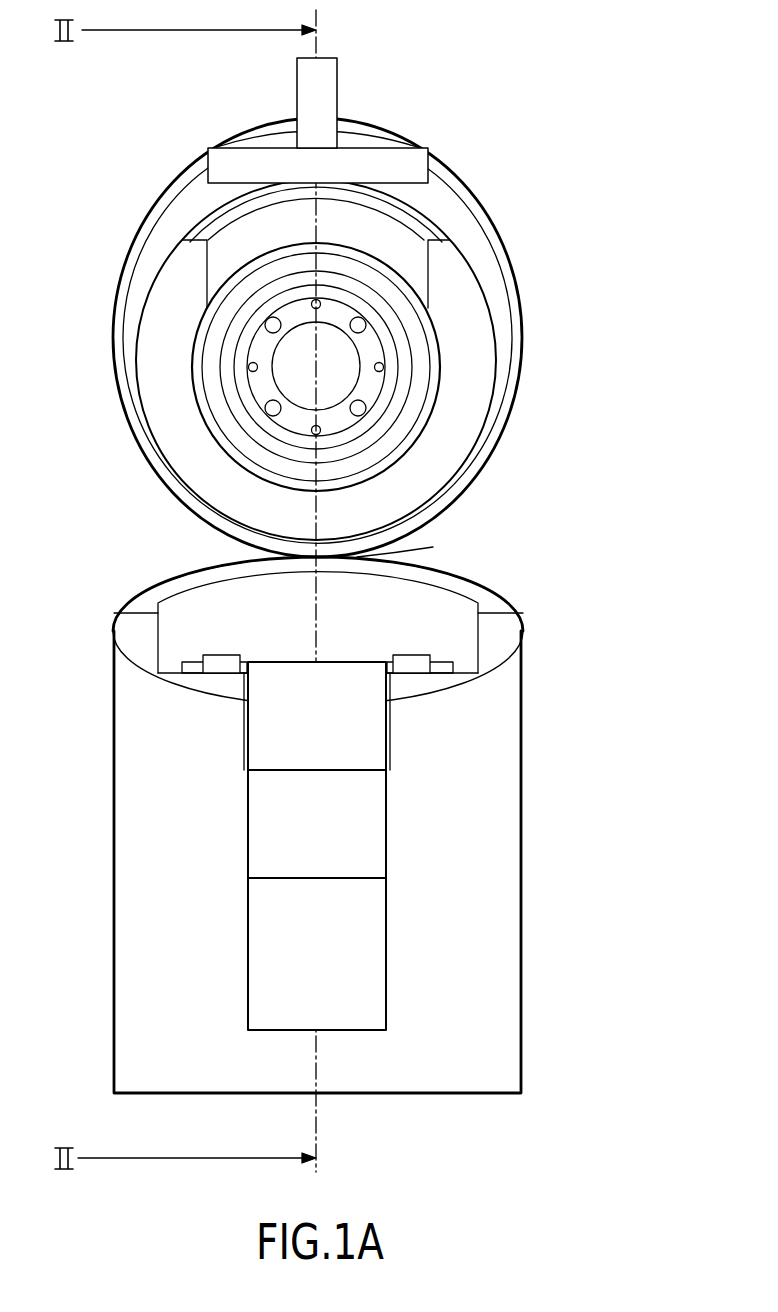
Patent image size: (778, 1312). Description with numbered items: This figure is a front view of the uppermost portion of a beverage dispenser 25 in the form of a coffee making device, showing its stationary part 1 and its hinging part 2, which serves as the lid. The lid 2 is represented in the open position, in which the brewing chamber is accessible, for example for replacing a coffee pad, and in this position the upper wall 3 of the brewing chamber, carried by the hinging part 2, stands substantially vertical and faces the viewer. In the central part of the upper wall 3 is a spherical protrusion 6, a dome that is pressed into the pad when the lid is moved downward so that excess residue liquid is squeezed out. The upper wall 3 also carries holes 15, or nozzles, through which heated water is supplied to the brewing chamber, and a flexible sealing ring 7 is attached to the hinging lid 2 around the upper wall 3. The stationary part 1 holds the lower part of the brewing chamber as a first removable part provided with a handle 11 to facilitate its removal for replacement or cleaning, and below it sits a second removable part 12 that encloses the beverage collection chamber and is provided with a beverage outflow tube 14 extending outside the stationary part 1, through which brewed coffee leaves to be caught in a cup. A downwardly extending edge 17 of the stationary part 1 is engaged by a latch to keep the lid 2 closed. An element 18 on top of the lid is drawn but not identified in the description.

The stationary part 1 is at (130, 975).
The hinging part 2 is at (143, 370).
The upper wall 3 is at (377, 347).
The spherical protrusion 6 is at (330, 395).
The flexible sealing ring 7 is at (257, 453).
The handle 11 is at (363, 733).
The second removable part 12 is at (267, 825).
The beverage outflow tube 14 is at (363, 977).
The holes 15 is at (270, 326).
The downwardly extending edge 17 is at (223, 661).
The stem 18 is at (325, 70).
The beverage dispenser 25 is at (539, 101).